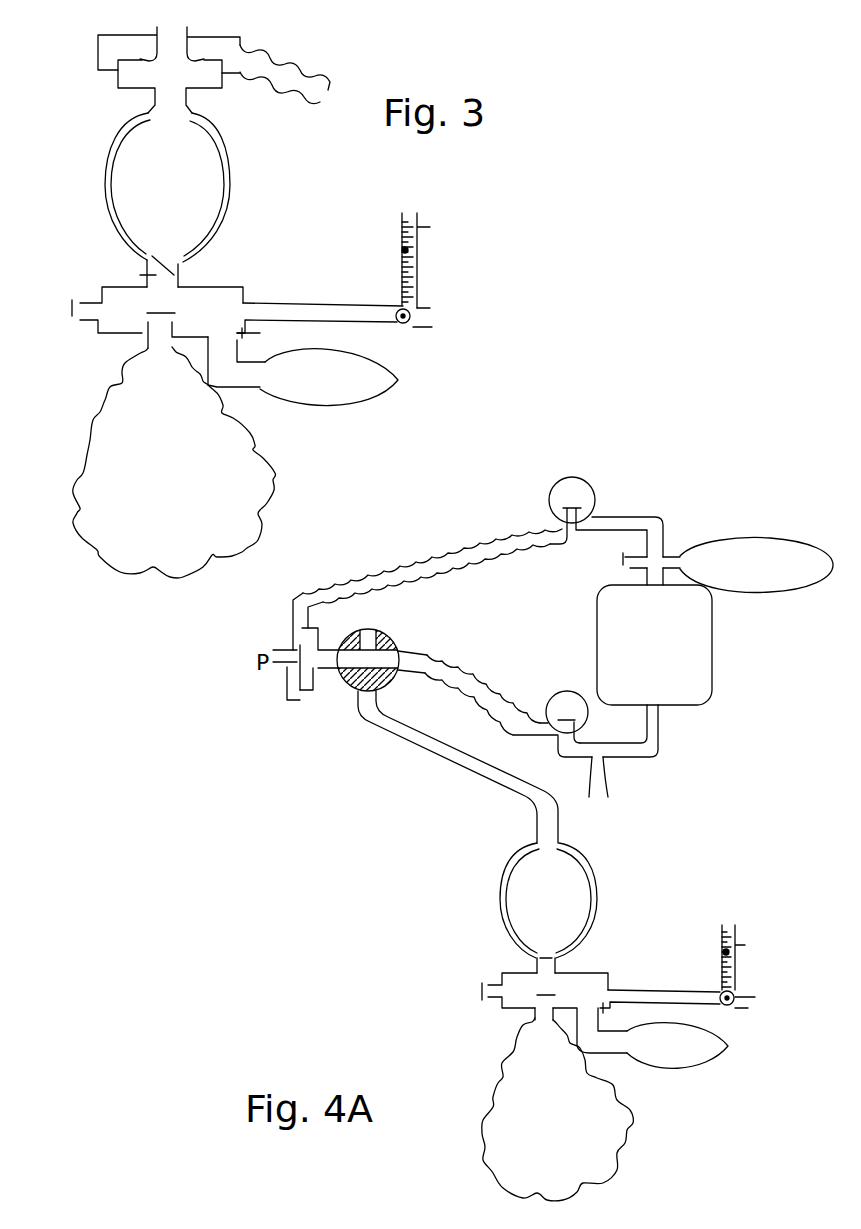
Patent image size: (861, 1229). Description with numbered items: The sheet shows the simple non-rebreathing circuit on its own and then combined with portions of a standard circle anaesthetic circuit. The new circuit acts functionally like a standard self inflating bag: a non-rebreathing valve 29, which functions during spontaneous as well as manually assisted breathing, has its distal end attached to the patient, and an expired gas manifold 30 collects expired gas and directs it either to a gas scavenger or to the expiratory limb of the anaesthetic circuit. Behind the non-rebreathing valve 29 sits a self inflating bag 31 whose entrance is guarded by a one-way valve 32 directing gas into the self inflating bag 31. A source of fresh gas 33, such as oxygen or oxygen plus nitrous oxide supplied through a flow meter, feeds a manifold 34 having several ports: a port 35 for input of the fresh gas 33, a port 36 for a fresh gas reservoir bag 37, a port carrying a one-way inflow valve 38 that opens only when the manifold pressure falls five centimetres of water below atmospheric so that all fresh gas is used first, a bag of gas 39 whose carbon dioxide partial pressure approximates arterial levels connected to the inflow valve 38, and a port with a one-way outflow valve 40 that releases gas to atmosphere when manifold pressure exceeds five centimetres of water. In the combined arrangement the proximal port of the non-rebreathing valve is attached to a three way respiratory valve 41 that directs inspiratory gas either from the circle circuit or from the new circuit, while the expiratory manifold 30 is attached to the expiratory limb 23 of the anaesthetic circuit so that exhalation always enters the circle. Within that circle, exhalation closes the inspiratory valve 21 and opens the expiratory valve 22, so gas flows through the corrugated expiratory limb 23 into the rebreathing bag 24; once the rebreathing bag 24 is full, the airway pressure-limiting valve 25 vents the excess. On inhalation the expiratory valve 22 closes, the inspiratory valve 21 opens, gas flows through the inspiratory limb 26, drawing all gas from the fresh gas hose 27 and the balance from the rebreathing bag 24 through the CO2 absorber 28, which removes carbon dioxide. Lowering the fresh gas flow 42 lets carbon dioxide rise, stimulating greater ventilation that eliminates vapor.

In FIG. 4A, the inspiratory valve 21 is at (560, 704).
In FIG. 4A, the expiratory valve 22 is at (558, 503).
In FIG. 4A, the expiratory limb of the circuit 23 is at (435, 556).
In FIG. 4A, the rebreathing bag 24 is at (750, 540).
In FIG. 4A, the airway pressure-limiting valve 25 is at (622, 560).
In FIG. 4A, the inspiratory limb of the circuit 26 is at (466, 690).
In FIG. 4A, the fresh gas hose 27 is at (612, 786).
In FIG. 4A, the CO2 absorber 28 is at (712, 640).
In FIG. 3, the non-rebreathing valve 29 is at (118, 80).
In FIG. 4A, the non-rebreathing valve 29 is at (316, 692).
In FIG. 3, the expired gas manifold 30 is at (97, 48).
In FIG. 4A, the expired gas manifold 30 is at (296, 700).
In FIG. 3, the self inflating bag 31 is at (103, 172).
In FIG. 4A, the self inflating bag 31 is at (500, 897).
In FIG. 3, the one-way valve 32 is at (148, 276).
In FIG. 4A, the one-way valve 32 is at (537, 965).
In FIG. 4A, the source of fresh gas 33 is at (759, 1002).
In FIG. 3, the manifold 34 is at (230, 295).
In FIG. 4A, the manifold 34 is at (590, 975).
In FIG. 3, the port 35 is at (250, 305).
In FIG. 4A, the port 35 is at (610, 990).
In FIG. 3, the port 36 is at (245, 334).
In FIG. 4A, the port 36 is at (588, 1010).
In FIG. 3, the fresh gas reservoir bag 37 is at (357, 407).
In FIG. 4A, the fresh gas reservoir bag 37 is at (700, 1068).
In FIG. 3, the one-way inflow valve 38 is at (140, 340).
In FIG. 4A, the one-way inflow valve 38 is at (525, 1010).
In FIG. 3, the bag of gas 39 is at (280, 474).
In FIG. 4A, the bag of gas 39 is at (630, 1140).
In FIG. 3, the one-way outflow valve 40 is at (72, 305).
In FIG. 4A, the one-way outflow valve 40 is at (478, 992).
In FIG. 4A, the 3 way respiratory valve 41 is at (395, 645).
In FIG. 3, the FGF 42 is at (417, 227).
In FIG. 4A, the FGF 42 is at (736, 940).